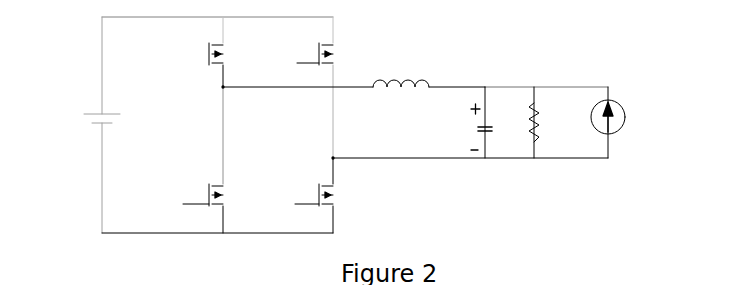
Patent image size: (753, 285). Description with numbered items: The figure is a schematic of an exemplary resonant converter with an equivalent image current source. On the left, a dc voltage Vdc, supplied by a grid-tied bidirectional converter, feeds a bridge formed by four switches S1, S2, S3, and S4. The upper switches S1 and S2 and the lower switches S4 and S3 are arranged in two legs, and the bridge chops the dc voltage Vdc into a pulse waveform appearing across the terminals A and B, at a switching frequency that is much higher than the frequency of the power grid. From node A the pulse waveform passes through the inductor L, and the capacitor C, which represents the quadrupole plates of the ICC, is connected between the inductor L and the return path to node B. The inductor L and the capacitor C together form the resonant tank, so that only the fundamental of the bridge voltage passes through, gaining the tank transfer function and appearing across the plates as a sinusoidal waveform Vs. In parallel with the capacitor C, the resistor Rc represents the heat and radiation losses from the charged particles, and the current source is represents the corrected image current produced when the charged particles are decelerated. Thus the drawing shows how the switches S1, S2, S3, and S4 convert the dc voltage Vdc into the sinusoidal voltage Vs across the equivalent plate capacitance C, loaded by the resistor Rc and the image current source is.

The dc voltage Vdc is at (80, 122).
The switch S1 is at (234, 54).
The switch S2 is at (334, 54).
The switch S3 is at (333, 195).
The switch S4 is at (220, 195).
The bridge output node A is at (212, 89).
The bridge output node B is at (323, 159).
The inductor L is at (401, 71).
The capacitor C is at (495, 131).
The resistor Rc is at (549, 122).
The sinusoidal voltage Vs is at (461, 127).
The current source is is at (618, 117).